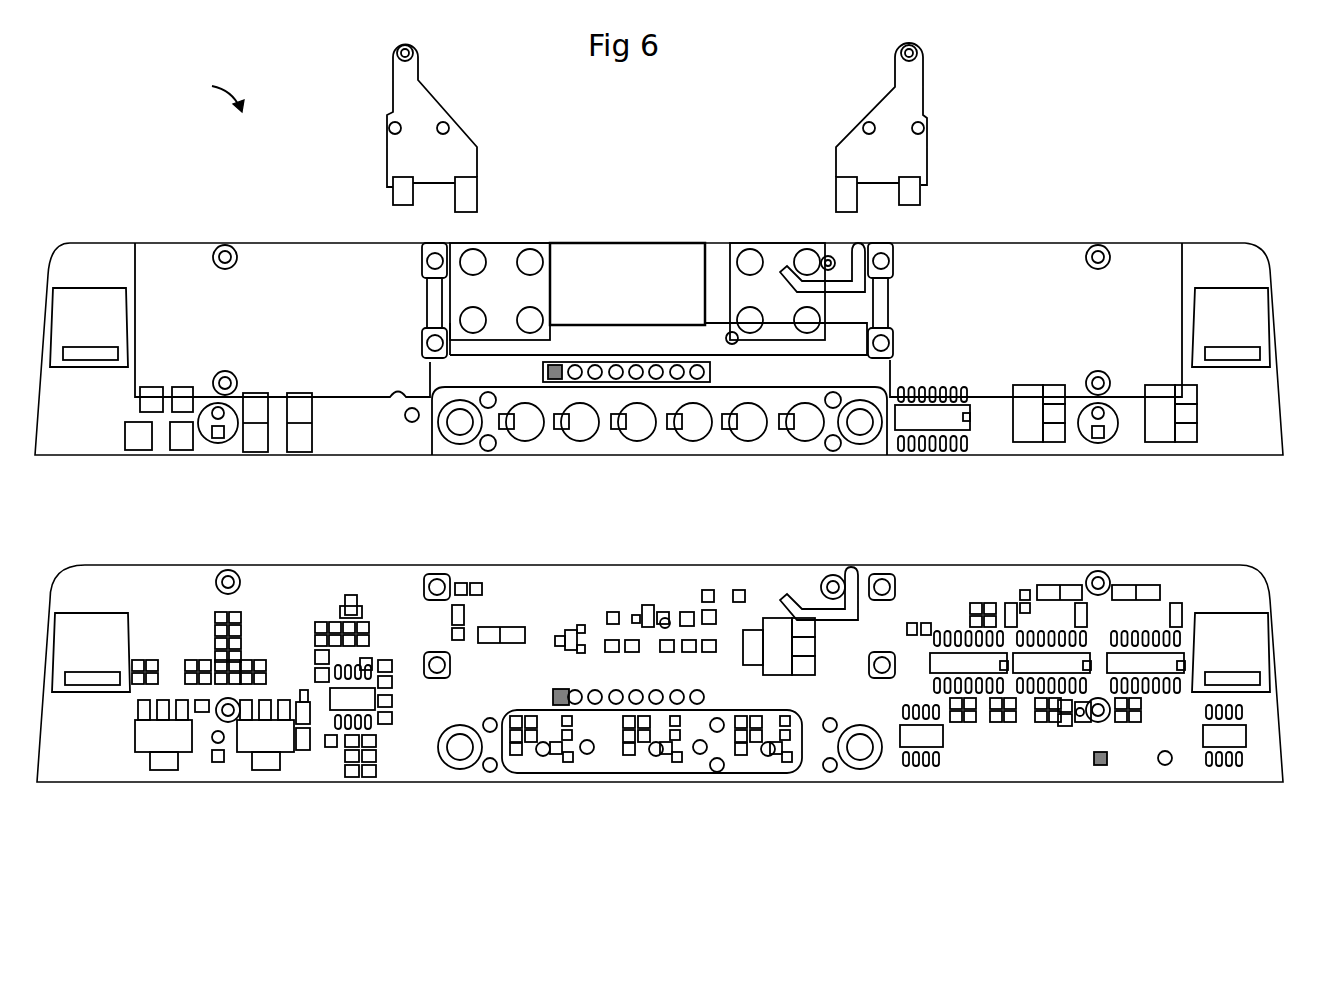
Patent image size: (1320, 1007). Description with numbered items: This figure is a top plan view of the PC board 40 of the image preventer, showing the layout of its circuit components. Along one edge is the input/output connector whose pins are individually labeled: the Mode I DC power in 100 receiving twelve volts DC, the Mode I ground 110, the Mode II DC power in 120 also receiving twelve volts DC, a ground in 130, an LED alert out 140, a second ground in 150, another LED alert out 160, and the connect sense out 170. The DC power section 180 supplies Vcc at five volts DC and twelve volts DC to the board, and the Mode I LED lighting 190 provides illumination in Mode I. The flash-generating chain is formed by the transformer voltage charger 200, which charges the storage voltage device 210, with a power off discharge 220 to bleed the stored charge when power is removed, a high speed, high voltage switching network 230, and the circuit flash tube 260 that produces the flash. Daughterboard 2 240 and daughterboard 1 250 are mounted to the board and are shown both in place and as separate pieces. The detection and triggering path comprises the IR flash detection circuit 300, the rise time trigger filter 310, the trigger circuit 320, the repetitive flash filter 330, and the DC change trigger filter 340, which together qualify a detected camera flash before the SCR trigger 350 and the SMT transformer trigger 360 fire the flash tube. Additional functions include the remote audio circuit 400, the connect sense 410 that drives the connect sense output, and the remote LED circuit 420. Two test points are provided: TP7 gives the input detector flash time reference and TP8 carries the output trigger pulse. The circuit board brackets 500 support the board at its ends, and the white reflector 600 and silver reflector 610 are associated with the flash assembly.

The PC board 40 is at (211, 99).
The Mode I DC power in 100 is at (553, 372).
The Mode I ground 110 is at (572, 374).
The Mode II DC power in 120 is at (595, 374).
The ground in 130 is at (617, 374).
The LED alert out 140 is at (683, 374).
The ground in 150 is at (660, 374).
The LED alert out 160 is at (637, 374).
The connect sense out 170 is at (703, 374).
The DC power 180 is at (167, 737).
The Mode I LED lighting 190 is at (207, 443).
The transformer voltage charger 200 is at (517, 300).
The storage voltage device 210 is at (370, 363).
The power off discharge 220 is at (635, 610).
The high speed high voltage switching network 230 is at (943, 420).
The daughterboard 2 240 is at (400, 162).
The daughterboard 1 250 is at (912, 165).
The circuit flash tube 260 is at (860, 360).
The IR flash detection circuit 300 is at (798, 437).
The rise time trigger filter 310 is at (348, 737).
The trigger circuit 320 is at (640, 720).
The repetitive flash filter 330 is at (1225, 737).
The DC change trigger filter 340 is at (920, 737).
The SCR trigger 350 is at (778, 650).
The SMT transformer trigger 360 is at (753, 288).
The remote audio circuit 400 is at (1133, 662).
The connect sense 410 is at (1062, 722).
The remote LED circuit 420 is at (1078, 710).
The circuit board brackets 500 is at (88, 337).
The reflector white 600 is at (1242, 263).
The reflector silver 610 is at (467, 447).
The input detector flash time reference TP7 is at (367, 665).
The output trigger pulse TP8 is at (808, 322).